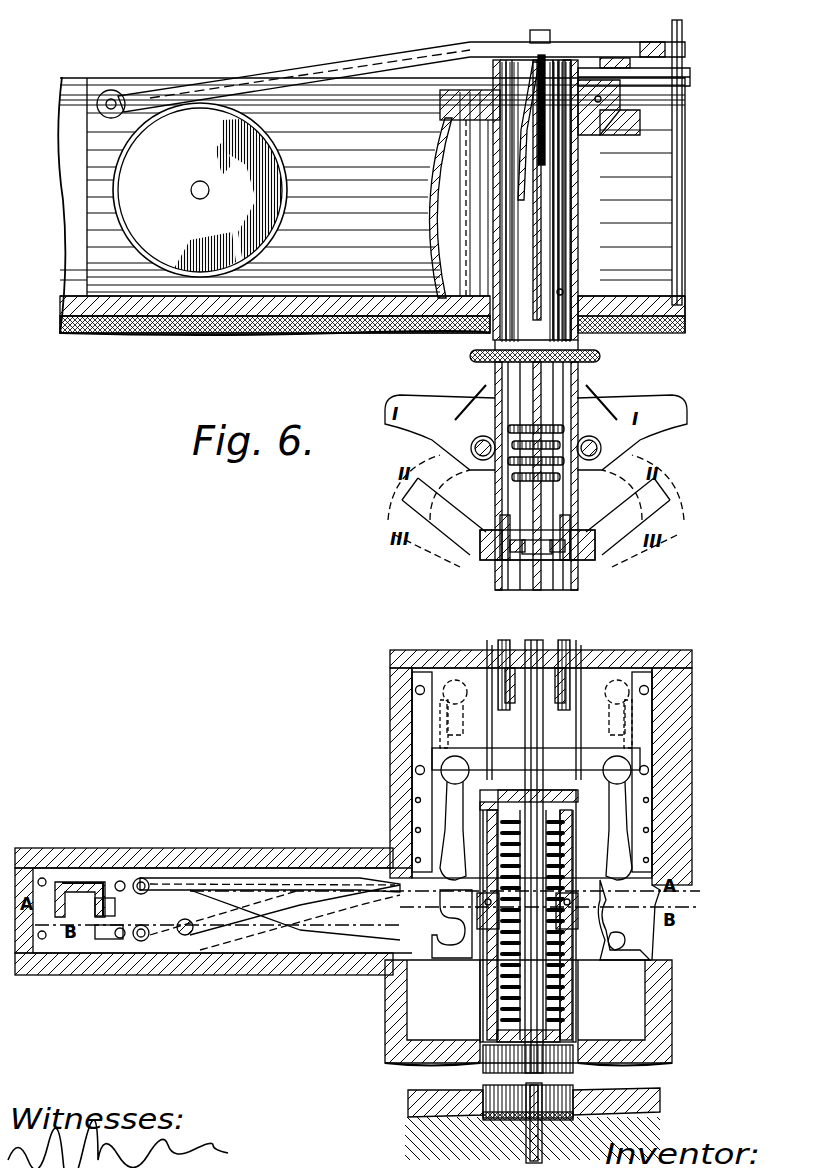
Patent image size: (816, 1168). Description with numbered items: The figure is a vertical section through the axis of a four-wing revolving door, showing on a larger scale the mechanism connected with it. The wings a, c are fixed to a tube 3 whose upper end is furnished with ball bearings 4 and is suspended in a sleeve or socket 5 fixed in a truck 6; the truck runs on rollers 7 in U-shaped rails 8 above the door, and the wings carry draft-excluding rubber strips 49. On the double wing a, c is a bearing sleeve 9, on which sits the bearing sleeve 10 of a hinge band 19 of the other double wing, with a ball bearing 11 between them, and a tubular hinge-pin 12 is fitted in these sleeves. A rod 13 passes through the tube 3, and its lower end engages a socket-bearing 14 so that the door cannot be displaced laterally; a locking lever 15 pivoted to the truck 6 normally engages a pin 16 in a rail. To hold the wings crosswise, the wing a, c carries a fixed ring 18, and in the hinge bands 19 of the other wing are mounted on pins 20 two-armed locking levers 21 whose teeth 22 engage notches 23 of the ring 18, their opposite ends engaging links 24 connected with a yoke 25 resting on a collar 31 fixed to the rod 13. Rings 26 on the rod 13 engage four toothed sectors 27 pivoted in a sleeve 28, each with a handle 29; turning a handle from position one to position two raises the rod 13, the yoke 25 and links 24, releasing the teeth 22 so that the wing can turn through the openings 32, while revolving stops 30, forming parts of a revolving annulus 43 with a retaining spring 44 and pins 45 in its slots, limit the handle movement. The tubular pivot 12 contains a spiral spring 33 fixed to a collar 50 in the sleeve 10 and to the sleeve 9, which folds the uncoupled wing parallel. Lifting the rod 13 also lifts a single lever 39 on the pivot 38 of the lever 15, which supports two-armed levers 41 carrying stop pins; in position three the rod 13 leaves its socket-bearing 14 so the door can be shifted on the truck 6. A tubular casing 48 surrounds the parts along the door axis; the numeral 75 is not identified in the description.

The tube 3 is at (573, 268).
The ball bearings 4 is at (597, 78).
The sleeve or socket 5 is at (585, 200).
The truck 6 is at (418, 97).
The rollers 7 is at (207, 263).
The U-shaped rails 8 is at (56, 330).
The bearing sleeve 9 is at (562, 1015).
The bearing sleeve 10 is at (567, 834).
The ball bearing 11 is at (580, 884).
The tubular hinge-pin 12 is at (560, 980).
The rod 13 is at (550, 238).
The socket-bearing 14 is at (545, 1152).
The locking lever 15 is at (393, 55).
The projection or pin 16 is at (582, 78).
The fixed ring 18 is at (56, 905).
The hinge band 19 is at (289, 880).
The pin 20 is at (183, 932).
The two-armed locking lever 21 is at (307, 938).
The tooth 22 is at (97, 920).
The notch 23 is at (98, 912).
The link 24 is at (412, 721).
The yoke 25 is at (646, 656).
The rings 26 is at (552, 447).
The toothed sectors 27 is at (500, 434).
The sleeve 28 is at (490, 325).
The handle 29 is at (403, 489).
The revolving stops 30 is at (462, 530).
The collar 31 is at (573, 762).
The openings 32 is at (57, 890).
The spiral spring 33 is at (500, 985).
The pivot 38 is at (113, 99).
The single lever 39 is at (592, 54).
The two-armed levers 41 is at (548, 31).
The revolving annulus 43 is at (588, 548).
The retaining spring 44 is at (523, 555).
The pins or screws 45 is at (483, 558).
The tubular casing 48 is at (492, 647).
The rubber strips 49 is at (263, 328).
The collar 50 is at (563, 808).
The rod 75 is at (637, 42).